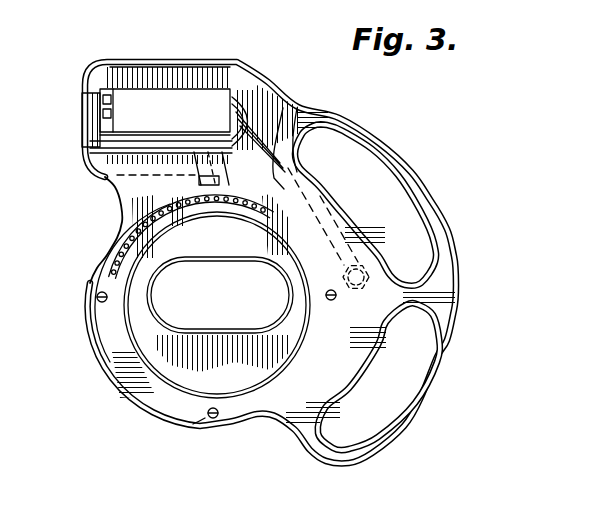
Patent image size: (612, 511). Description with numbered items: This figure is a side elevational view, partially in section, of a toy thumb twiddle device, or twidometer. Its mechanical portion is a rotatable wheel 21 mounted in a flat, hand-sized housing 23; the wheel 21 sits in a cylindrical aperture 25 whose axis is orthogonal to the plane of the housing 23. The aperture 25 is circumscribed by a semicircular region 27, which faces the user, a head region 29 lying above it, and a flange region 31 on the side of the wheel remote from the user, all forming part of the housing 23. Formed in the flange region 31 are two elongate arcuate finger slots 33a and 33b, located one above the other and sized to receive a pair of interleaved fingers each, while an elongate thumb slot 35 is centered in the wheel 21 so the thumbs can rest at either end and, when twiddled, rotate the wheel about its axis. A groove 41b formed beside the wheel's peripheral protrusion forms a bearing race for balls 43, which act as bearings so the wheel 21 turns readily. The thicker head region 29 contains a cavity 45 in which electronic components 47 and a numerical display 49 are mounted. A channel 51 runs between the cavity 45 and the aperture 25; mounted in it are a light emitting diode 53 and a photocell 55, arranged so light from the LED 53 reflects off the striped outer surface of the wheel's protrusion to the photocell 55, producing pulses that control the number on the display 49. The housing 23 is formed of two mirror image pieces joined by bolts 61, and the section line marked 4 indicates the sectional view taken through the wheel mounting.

The rotatable wheel 21 is at (157, 348).
The housing 23 is at (150, 418).
The cylindrical aperture 25 is at (130, 342).
The semicircular region 27 is at (173, 403).
The head region 29 is at (207, 72).
The flange region 31 is at (433, 287).
The arcuate finger slot 33a is at (375, 170).
The arcuate finger slot 33b is at (403, 385).
The thumb slot 35 is at (163, 305).
The groove 41b is at (128, 250).
The balls 43 is at (120, 268).
The cavity 45 is at (258, 97).
The electronic components 47 is at (150, 102).
The display 49 is at (95, 100).
The channel 51 is at (297, 107).
The light emitting diode 53 is at (216, 186).
The photocell 55 is at (203, 177).
The bolts 61 is at (93, 293).
The section line 4- 4 is at (193, 362).